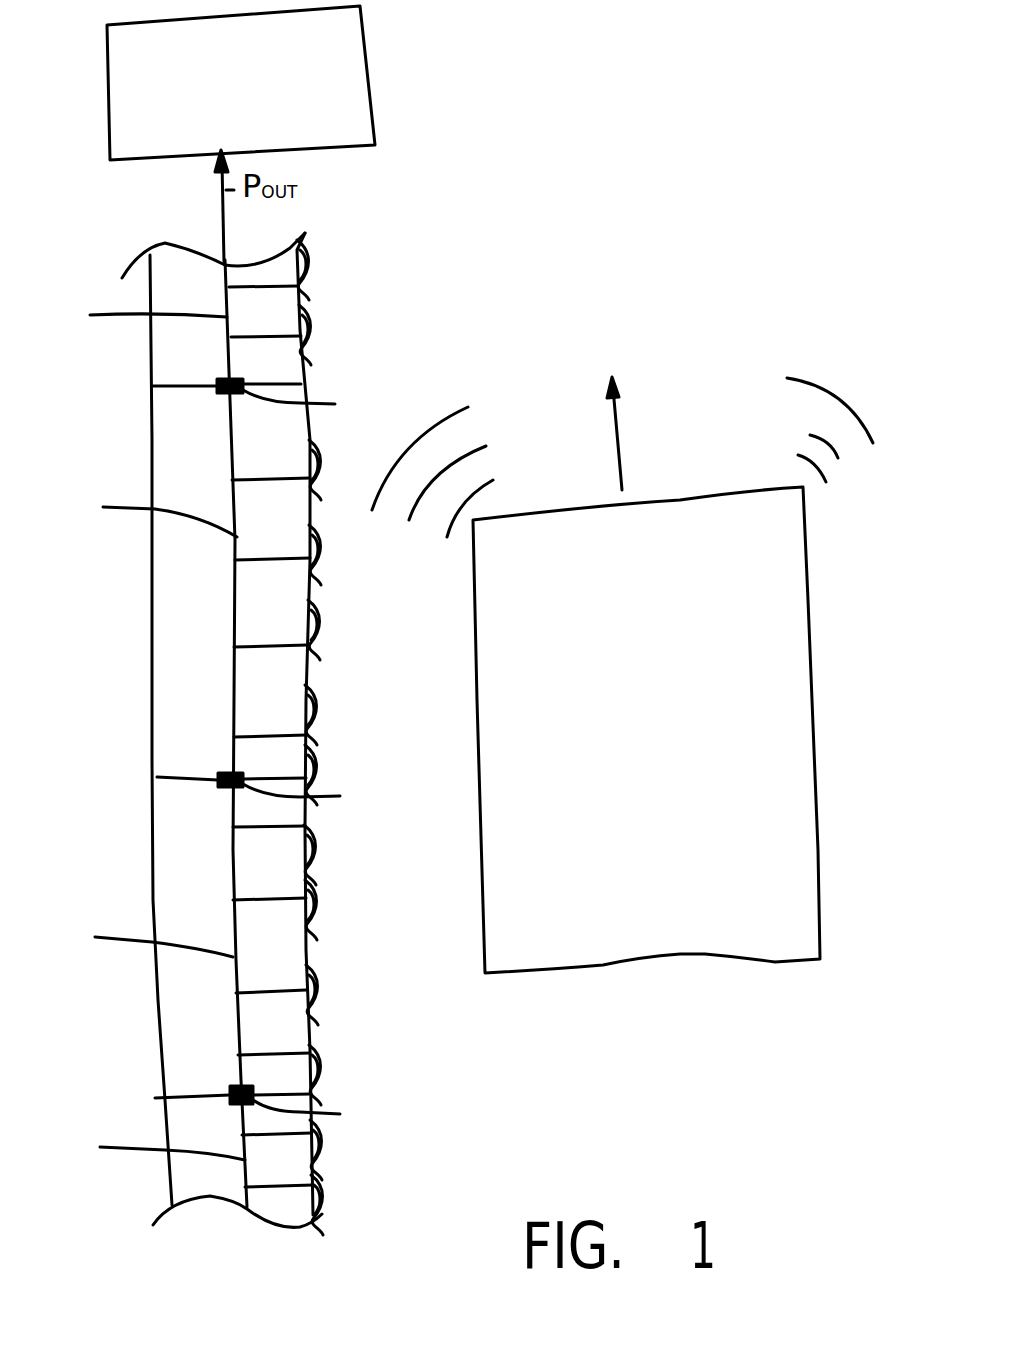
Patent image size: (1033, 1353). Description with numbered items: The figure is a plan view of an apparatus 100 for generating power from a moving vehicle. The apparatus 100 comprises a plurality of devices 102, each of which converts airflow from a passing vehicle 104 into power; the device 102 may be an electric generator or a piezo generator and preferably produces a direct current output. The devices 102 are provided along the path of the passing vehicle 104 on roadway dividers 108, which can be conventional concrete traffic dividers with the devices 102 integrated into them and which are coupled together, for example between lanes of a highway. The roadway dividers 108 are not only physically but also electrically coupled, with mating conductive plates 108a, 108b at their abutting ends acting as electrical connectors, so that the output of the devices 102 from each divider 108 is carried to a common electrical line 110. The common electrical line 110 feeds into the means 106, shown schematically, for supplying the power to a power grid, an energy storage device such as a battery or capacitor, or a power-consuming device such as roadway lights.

The apparatus 100 is at (328, 288).
The device 102 is at (317, 333).
The passing vehicle 104 is at (806, 572).
The means for supplying the power 106 is at (368, 82).
The roadway divider 108 is at (138, 737).
The conductive plate 108a is at (330, 757).
The conductive plate 108b is at (243, 381).
The common electrical line 110 is at (148, 852).